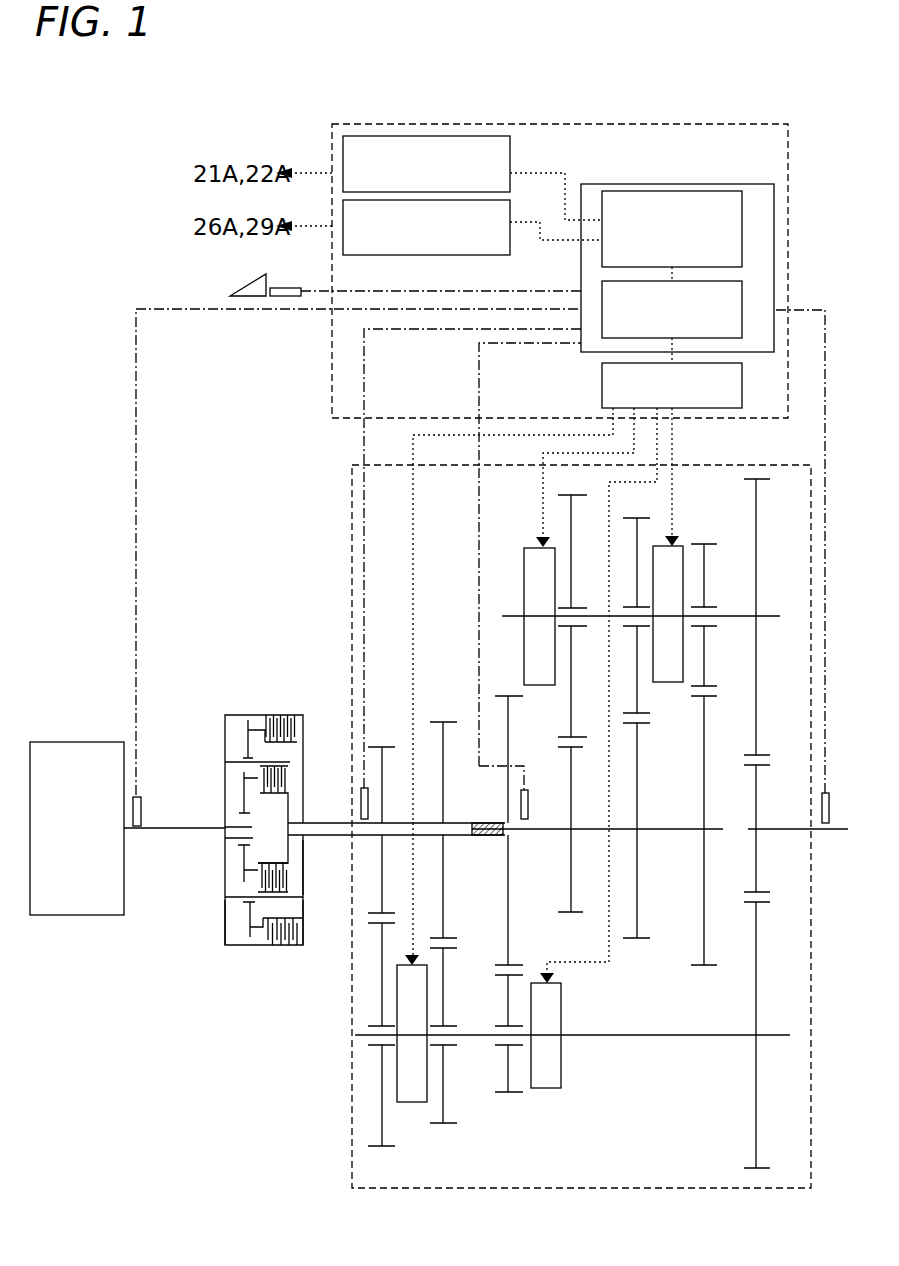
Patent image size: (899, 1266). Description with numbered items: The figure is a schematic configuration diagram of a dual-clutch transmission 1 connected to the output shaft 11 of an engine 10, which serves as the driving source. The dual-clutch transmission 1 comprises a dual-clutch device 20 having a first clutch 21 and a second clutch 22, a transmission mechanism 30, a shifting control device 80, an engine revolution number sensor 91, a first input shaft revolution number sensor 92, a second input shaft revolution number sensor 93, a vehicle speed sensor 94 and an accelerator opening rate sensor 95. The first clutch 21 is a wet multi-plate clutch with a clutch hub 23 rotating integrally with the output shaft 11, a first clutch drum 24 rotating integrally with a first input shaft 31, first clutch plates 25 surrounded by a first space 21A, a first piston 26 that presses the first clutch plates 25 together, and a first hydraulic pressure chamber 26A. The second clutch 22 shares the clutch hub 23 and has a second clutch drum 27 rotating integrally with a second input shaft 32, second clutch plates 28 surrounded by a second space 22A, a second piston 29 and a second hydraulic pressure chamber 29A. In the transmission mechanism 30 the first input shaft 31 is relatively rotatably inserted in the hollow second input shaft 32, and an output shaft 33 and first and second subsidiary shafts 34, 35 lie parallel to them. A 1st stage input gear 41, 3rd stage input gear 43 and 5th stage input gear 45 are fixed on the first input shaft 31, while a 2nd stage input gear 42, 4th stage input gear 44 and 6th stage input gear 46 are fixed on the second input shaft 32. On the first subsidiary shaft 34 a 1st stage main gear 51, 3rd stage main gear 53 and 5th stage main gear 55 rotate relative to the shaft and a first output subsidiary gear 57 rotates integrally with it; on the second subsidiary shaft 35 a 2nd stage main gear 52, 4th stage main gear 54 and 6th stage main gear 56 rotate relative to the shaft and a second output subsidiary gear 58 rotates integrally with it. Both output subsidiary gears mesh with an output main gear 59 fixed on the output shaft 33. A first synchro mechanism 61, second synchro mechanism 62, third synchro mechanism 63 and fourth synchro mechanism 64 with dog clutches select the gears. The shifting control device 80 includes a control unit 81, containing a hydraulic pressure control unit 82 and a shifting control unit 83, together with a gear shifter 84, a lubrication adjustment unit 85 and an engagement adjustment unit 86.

The dual-clutch transmission 1 is at (823, 177).
The engine 10 is at (92, 841).
The output shaft 11 is at (152, 833).
The dual-clutch device 20 is at (268, 698).
The first clutch 21 is at (221, 774).
The first space 21A is at (290, 782).
The second clutch 22 is at (221, 720).
The second space 22A is at (318, 712).
The clutch hub 23 is at (224, 906).
The first clutch drum 24 is at (290, 818).
The first clutch plates 25 is at (272, 858).
The first piston 26 is at (243, 852).
The first hydraulic pressure chamber 26A is at (256, 872).
The second clutch drum 27 is at (305, 860).
The second clutch plates 28 is at (300, 934).
The second piston 29 is at (247, 922).
The second hydraulic pressure chamber 29A is at (230, 922).
The transmission mechanism 30 is at (800, 465).
The first input shaft 31 is at (673, 829).
The second input shaft 32 is at (418, 822).
The output shaft 33 is at (788, 829).
The first subsidiary shaft 34 is at (776, 616).
The second subsidiary shaft 35 is at (690, 1035).
The 1st stage input gear 41 is at (571, 882).
The 2nd stage input gear 42 is at (382, 882).
The 3rd stage input gear 43 is at (637, 887).
The 4th stage input gear 44 is at (443, 882).
The 5th stage input gear 45 is at (704, 887).
The 6th stage input gear 46 is at (508, 882).
The 1st stage main gear 51 is at (583, 683).
The 2nd stage main gear 52 is at (382, 951).
The 3rd stage main gear 53 is at (637, 535).
The 4th stage main gear 54 is at (443, 999).
The 5th stage main gear 55 is at (704, 645).
The 6th stage main gear 56 is at (508, 1002).
The first output subsidiary gear 57 is at (756, 690).
The second output subsidiary gear 58 is at (756, 944).
The output main gear 59 is at (756, 851).
The first synchro mechanism 61 is at (541, 685).
The second synchro mechanism 62 is at (412, 1102).
The third synchro mechanism 63 is at (668, 682).
The fourth synchro mechanism 64 is at (546, 1088).
The shifting control device 80 is at (688, 123).
The control unit 81 is at (718, 184).
The hydraulic pressure control unit 82 is at (742, 230).
The shifting control unit 83 is at (758, 293).
The gear shifter 84 is at (742, 390).
The lubrication adjustment unit 85 is at (510, 150).
The engagement adjustment unit 86 is at (510, 200).
The engine revolution number sensor 91 is at (141, 812).
The first input shaft revolution number sensor 92 is at (528, 808).
The second input shaft revolution number sensor 93 is at (368, 794).
The vehicle speed sensor 94 is at (829, 808).
The accelerator opening rate sensor 95 is at (302, 288).